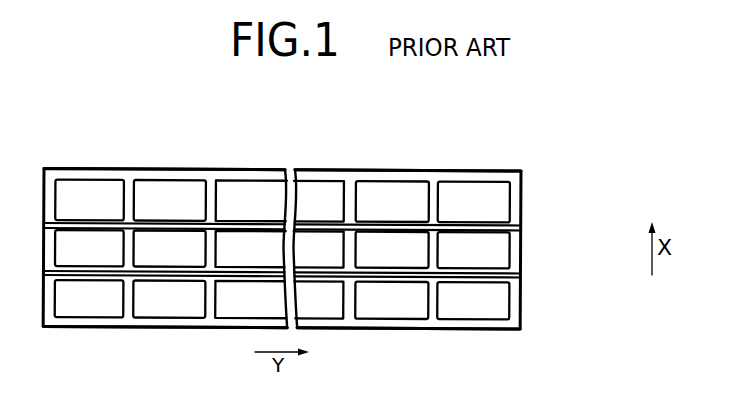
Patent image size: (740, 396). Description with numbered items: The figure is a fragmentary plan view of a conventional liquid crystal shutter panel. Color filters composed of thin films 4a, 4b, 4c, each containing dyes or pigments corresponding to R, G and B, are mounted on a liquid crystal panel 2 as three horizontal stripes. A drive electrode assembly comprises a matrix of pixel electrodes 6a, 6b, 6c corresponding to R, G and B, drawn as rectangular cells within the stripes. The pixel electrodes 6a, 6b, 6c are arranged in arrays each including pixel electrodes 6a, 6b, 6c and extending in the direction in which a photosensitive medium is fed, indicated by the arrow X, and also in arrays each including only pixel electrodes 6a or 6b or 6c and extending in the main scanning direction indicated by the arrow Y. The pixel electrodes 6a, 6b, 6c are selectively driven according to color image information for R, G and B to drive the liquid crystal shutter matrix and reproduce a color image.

The liquid crystal panel 2 is at (282, 130).
The thin film 4a is at (516, 200).
The thin film 4b is at (516, 253).
The thin film 4c is at (516, 310).
The pixel electrode 6a is at (86, 197).
The pixel electrode 6b is at (170, 243).
The pixel electrode 6c is at (173, 302).